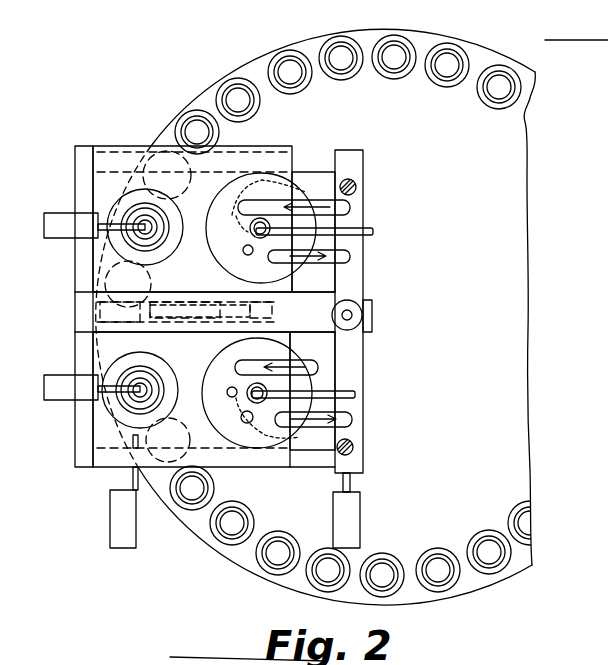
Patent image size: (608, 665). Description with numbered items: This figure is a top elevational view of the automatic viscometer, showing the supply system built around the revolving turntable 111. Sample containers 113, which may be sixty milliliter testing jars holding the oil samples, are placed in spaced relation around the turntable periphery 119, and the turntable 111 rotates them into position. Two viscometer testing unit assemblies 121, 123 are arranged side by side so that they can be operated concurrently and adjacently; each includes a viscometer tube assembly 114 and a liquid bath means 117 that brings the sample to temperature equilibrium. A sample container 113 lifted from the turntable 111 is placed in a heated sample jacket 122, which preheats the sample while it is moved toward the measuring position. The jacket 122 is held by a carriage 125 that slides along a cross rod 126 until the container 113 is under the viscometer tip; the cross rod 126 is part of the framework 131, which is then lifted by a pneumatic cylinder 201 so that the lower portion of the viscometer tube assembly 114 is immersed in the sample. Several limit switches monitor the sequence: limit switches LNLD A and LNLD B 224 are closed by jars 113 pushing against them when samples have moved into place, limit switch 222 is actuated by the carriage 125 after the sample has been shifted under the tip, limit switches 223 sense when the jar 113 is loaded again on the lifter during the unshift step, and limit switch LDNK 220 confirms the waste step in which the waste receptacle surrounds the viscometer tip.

The turntable 111 is at (532, 342).
The sample containers 113 is at (233, 80).
The viscometer tube assembly 114 is at (252, 236).
The liquid bath means 117 is at (301, 263).
The turntable periphery 119 is at (247, 573).
The viscometer testing unit assembly 121 is at (357, 396).
The heated sample jacket 122 is at (140, 188).
The viscometer testing unit assembly 123 is at (375, 234).
The carriage 125 is at (108, 146).
The cross rod 126 is at (320, 462).
The framework 131 is at (75, 275).
The pneumatic cylinder 201 is at (364, 333).
The limit switch LDNK 220 is at (360, 520).
The limit switch 222 is at (217, 298).
The limit switches 223 is at (63, 212).
The limit switches LNLD A and LNLD B 224 is at (110, 527).